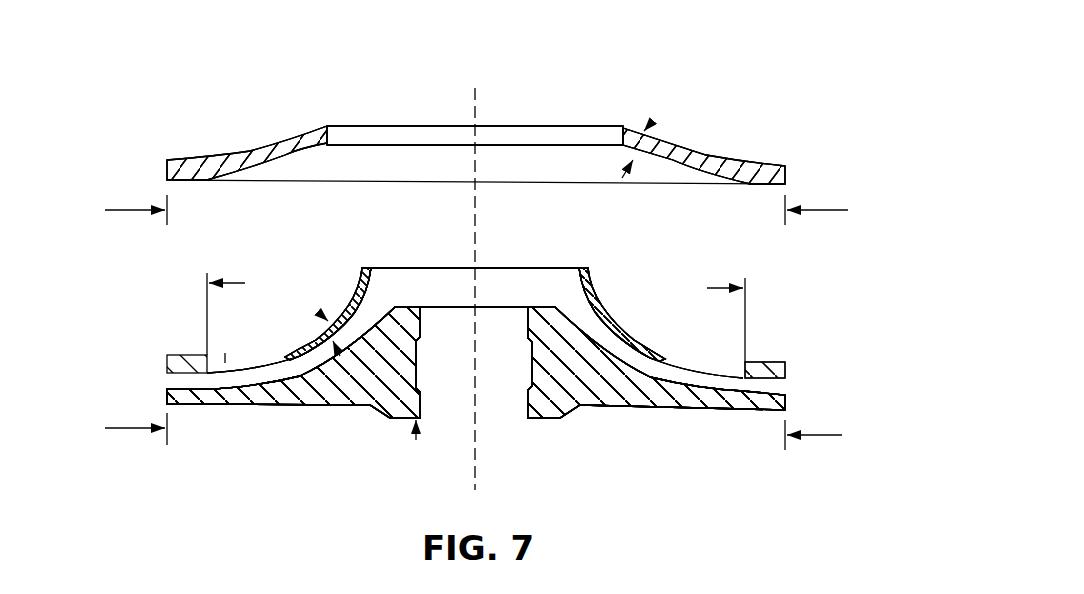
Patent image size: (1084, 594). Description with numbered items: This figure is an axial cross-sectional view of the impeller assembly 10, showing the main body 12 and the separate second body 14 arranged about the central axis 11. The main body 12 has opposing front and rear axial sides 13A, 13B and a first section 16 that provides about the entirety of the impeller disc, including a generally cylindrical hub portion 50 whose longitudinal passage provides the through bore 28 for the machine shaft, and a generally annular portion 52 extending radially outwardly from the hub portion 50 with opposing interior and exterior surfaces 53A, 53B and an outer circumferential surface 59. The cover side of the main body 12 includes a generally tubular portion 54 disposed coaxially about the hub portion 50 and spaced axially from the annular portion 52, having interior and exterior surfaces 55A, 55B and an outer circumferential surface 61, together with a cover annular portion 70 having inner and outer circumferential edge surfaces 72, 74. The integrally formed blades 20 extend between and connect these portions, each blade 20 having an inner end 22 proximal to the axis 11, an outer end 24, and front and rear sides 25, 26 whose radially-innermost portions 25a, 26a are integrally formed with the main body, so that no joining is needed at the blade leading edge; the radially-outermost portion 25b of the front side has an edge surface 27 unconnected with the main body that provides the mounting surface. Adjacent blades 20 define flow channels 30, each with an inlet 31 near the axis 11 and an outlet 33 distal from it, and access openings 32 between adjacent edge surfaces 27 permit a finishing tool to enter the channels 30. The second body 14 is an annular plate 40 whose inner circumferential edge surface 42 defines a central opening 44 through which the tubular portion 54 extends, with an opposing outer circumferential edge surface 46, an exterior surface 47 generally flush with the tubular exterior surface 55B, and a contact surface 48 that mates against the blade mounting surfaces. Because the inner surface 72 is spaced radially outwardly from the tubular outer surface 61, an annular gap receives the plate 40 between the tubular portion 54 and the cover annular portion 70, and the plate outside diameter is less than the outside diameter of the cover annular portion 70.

The impeller assembly 10 is at (140, 268).
The central axis 11 is at (478, 99).
The main body 12 is at (150, 325).
The front axial side 13A is at (617, 309).
The rear axial side 13B is at (587, 418).
The second body 14 is at (216, 130).
The first section 16 is at (713, 425).
The blades 20 is at (248, 402).
The inner end 22 is at (377, 302).
The outer end 24 is at (165, 378).
The front side 25 is at (258, 365).
The radially-innermost portion 25a is at (357, 295).
The radially-outermost portion 25b is at (290, 357).
The rear side 26 is at (216, 393).
The radially-innermost portion 26a is at (372, 355).
The edge surface 27 is at (630, 348).
The through bore 28 is at (498, 405).
The flow channels 30 is at (603, 352).
The inlet 31 is at (390, 305).
The access openings 32 is at (679, 354).
The outlet 33 is at (167, 388).
The annular plate 40 is at (262, 150).
The inner circumferential edge surface 42 is at (345, 135).
The central opening 44 is at (562, 140).
The outer circumferential edge surface 46 is at (787, 172).
The exterior surface 47 is at (686, 152).
The contact surface 48 is at (292, 164).
The hub portion 50 is at (388, 406).
The annular portion 52 is at (288, 402).
The interior surface 53A is at (663, 392).
The exterior surface 53B is at (732, 410).
The tubular portion 54 is at (591, 283).
The interior surface 55A is at (600, 318).
The exterior surface 55B is at (604, 299).
The outer circumferential surface 59 is at (167, 398).
The outer circumferential surface 61 is at (308, 318).
The cover annular portion 70 is at (783, 366).
The inner circumferential edge surface 72 is at (207, 360).
The outer circumferential edge surface 74 is at (786, 381).